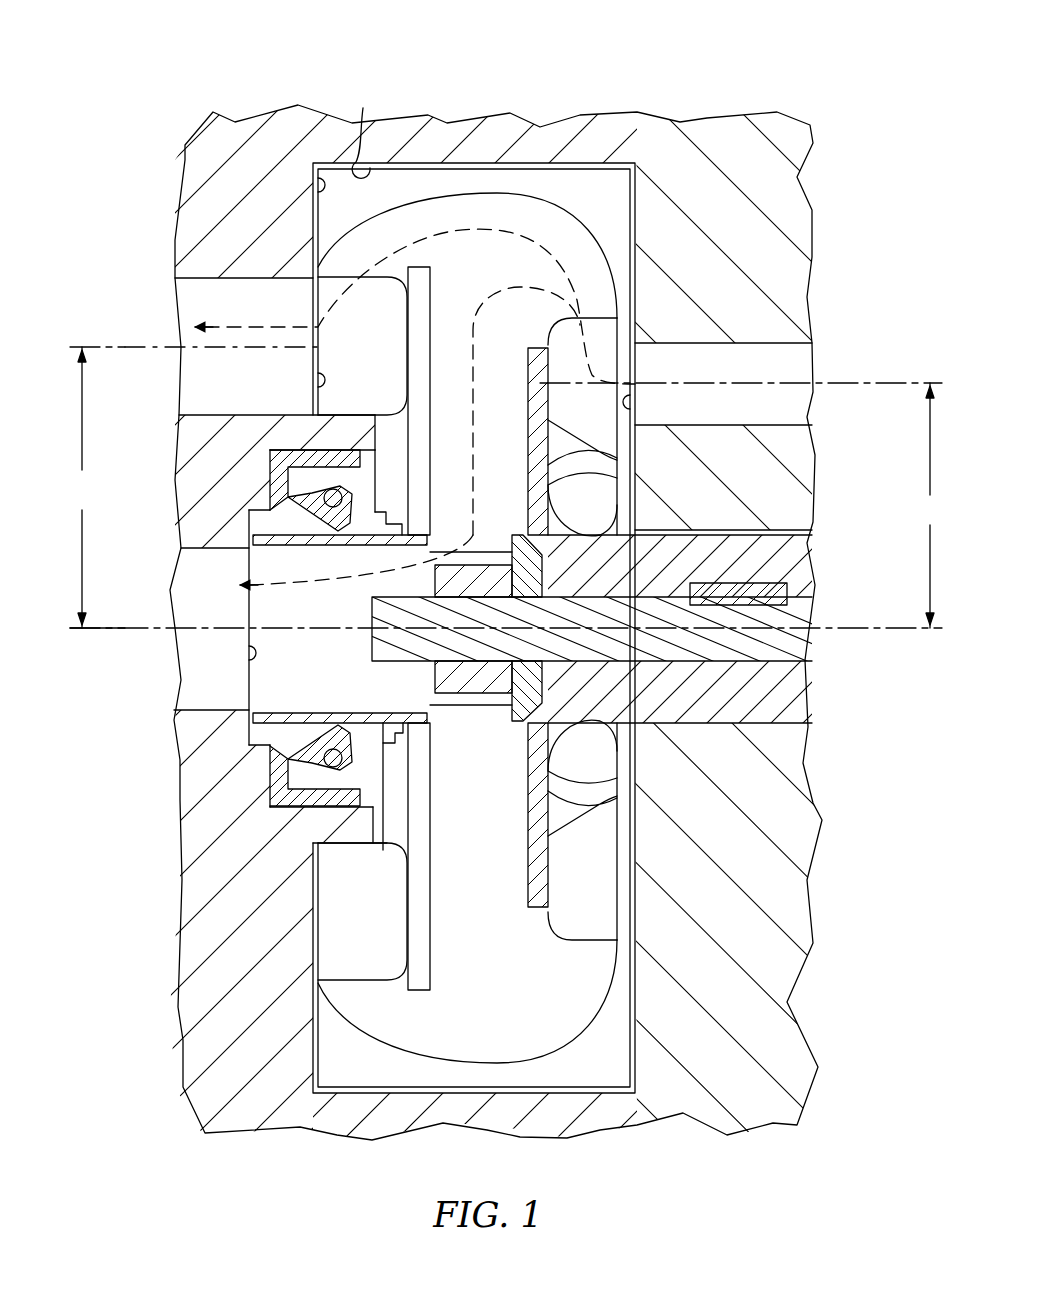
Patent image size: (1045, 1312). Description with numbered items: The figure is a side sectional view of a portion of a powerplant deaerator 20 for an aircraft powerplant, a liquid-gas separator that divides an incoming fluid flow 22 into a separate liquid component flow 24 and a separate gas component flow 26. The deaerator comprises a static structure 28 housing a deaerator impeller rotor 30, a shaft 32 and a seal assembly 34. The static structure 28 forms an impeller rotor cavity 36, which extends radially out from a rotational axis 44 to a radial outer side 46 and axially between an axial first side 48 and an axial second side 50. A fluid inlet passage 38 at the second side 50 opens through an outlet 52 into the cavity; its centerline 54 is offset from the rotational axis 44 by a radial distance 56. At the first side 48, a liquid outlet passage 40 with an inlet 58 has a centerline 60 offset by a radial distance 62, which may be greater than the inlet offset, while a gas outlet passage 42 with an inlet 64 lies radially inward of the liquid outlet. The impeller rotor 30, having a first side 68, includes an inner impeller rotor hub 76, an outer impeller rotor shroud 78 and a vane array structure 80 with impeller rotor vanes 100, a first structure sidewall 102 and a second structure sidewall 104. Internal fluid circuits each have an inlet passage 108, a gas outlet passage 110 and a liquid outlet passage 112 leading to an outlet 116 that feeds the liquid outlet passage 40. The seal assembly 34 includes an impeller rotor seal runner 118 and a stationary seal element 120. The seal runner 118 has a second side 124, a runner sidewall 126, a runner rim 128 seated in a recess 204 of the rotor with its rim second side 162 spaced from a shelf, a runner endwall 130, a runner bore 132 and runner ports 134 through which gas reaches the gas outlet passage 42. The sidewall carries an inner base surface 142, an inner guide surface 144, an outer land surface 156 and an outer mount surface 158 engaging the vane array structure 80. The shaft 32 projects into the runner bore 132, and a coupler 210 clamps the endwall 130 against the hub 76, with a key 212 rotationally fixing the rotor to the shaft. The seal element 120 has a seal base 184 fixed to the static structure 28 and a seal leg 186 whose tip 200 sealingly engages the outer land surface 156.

The powerplant deaerator 20 is at (860, 68).
The fluid flow 22 is at (566, 400).
The liquid component flow 24 is at (362, 346).
The gas component flow 26 is at (374, 606).
The static structure 28 is at (818, 151).
The deaerator impeller rotor 30 is at (487, 160).
The shaft 32 is at (814, 612).
The seal assembly 34 is at (253, 700).
The impeller rotor cavity 36 is at (642, 225).
The fluid inlet passage 38 is at (814, 355).
The liquid outlet passage 40 is at (188, 300).
The gas outlet passage 42 is at (181, 705).
The rotational axis 44 is at (130, 655).
The radial outer side of the rotor cavity 46 is at (366, 130).
The axial first side of the rotor cavity 48 is at (313, 178).
The axial second side of the rotor cavity 50 is at (633, 192).
The outlet from the fluid inlet passage 52 is at (636, 397).
The centerline of the fluid inlet passage 54 is at (852, 400).
The radial distance 56 is at (930, 505).
The inlet into the liquid outlet passage 58 is at (313, 381).
The centerline of the liquid outlet passage 60 is at (141, 352).
The radial distance 62 is at (82, 487).
The inlet into the gas outlet passage 64 is at (248, 650).
The first side of the impeller rotor 68 is at (313, 200).
The inner impeller rotor hub 76 is at (656, 578).
The outer impeller rotor shroud 78 is at (347, 1068).
The vane array structure 80 is at (370, 782).
The impeller rotor vanes 100 is at (597, 325).
The axial first structure sidewall 102 is at (440, 329).
The axial second structure sidewall 104 is at (522, 415).
The inlet passage 108 is at (596, 300).
The gas outlet passage 110 is at (480, 385).
The liquid outlet passage 112 is at (350, 268).
The outlet 116 is at (340, 396).
The impeller rotor seal runner 118 is at (301, 698).
The stationary seal element 120 is at (296, 815).
The axial second side of the seal runner 124 is at (550, 696).
The runner sidewall 126 is at (270, 725).
The runner rim 128 is at (392, 752).
The runner endwall 130 is at (546, 722).
The runner bore 132 is at (382, 656).
The runner ports 134 is at (490, 543).
The inner base surface 142 is at (520, 563).
The inner guide surface 144 is at (252, 562).
The outer land surface 156 is at (380, 722).
The outer mount surface 158 is at (404, 735).
The rim second side 162 is at (418, 745).
The seal base 184 is at (270, 795).
The seal leg 186 is at (294, 813).
The distal end tip 200 is at (306, 698).
The recess 204 is at (386, 752).
The coupler 210 is at (500, 613).
The key 212 is at (795, 590).